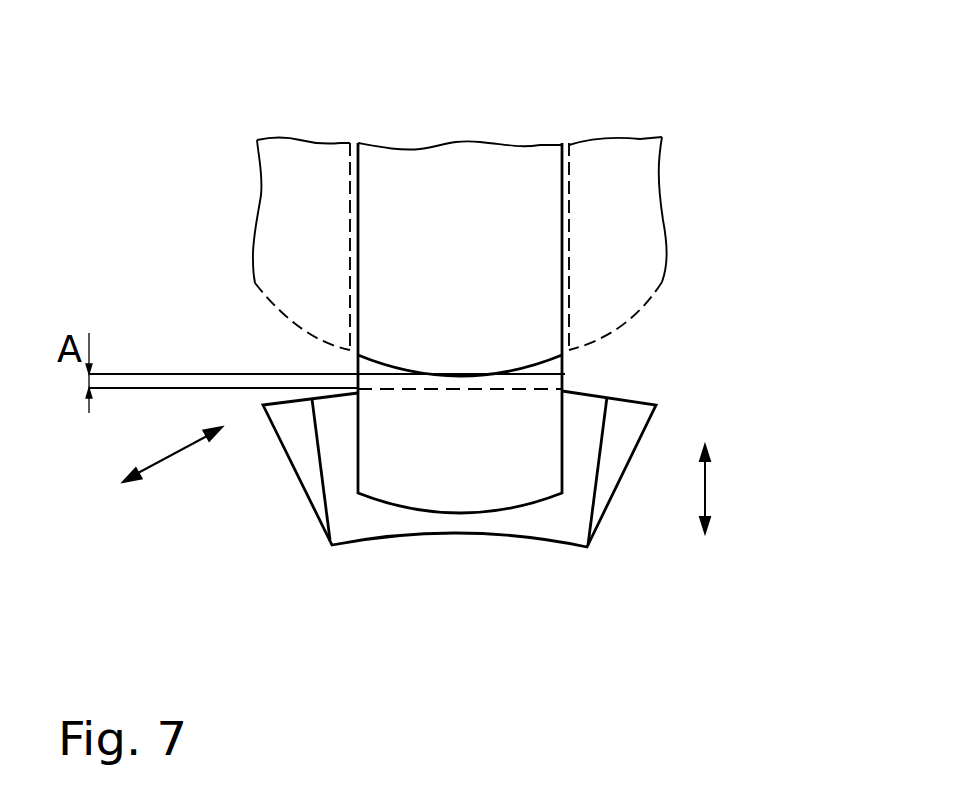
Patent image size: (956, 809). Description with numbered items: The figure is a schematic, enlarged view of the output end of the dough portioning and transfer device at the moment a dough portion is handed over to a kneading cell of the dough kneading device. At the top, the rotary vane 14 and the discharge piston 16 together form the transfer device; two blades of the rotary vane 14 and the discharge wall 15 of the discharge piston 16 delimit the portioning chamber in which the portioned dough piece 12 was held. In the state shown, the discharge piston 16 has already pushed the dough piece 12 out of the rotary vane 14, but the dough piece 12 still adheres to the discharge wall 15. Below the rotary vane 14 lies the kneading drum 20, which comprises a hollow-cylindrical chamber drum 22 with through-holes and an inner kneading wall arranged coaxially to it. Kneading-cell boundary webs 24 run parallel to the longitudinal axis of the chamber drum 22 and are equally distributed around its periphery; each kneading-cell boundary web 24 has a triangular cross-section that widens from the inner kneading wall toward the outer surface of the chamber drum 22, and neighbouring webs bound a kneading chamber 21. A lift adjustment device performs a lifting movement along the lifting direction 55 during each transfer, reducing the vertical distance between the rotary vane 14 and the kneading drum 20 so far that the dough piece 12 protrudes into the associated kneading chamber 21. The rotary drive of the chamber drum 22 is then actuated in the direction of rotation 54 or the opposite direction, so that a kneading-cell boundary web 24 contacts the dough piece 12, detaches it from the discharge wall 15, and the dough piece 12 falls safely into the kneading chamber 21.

The portioned dough piece 12 is at (475, 503).
The rotary vane 14 is at (295, 150).
The discharge wall 15 is at (565, 374).
The discharge piston 16 is at (567, 194).
The kneading drum 20 is at (484, 374).
The chamber drum 22 is at (638, 398).
The kneading chamber 21 is at (558, 528).
The kneading-cell boundary web 24 is at (295, 460).
The direction of rotation 54 is at (170, 452).
The lifting direction 55 is at (707, 490).